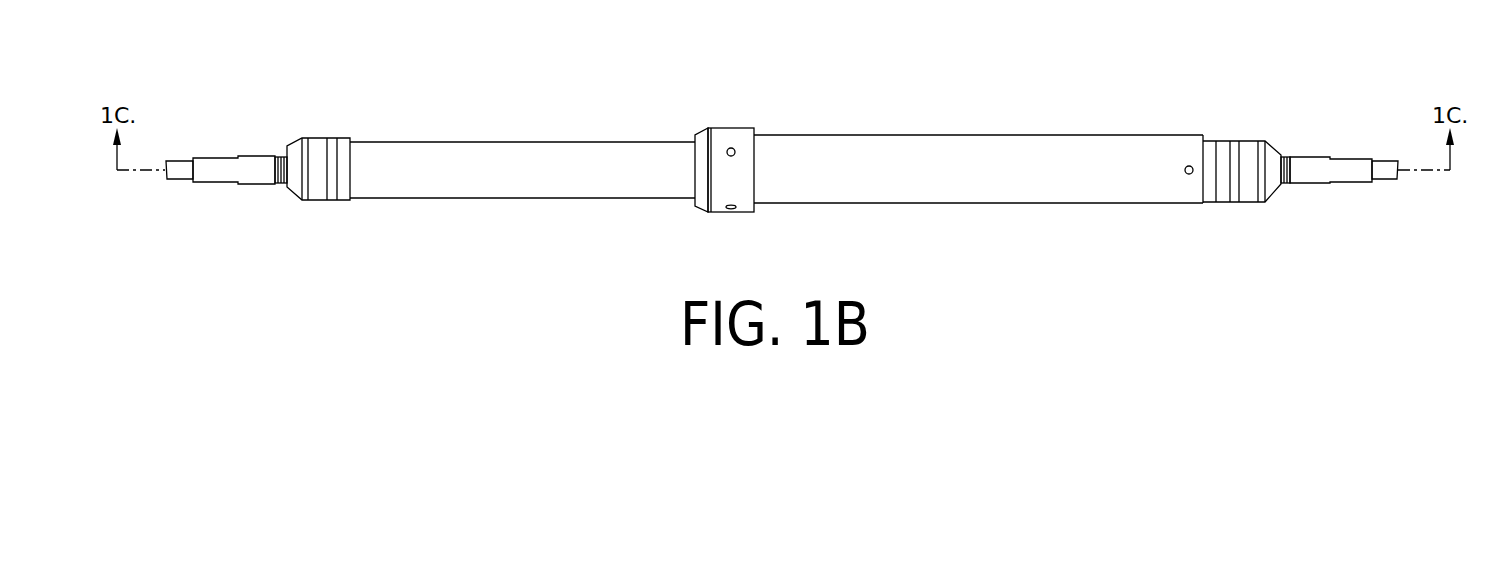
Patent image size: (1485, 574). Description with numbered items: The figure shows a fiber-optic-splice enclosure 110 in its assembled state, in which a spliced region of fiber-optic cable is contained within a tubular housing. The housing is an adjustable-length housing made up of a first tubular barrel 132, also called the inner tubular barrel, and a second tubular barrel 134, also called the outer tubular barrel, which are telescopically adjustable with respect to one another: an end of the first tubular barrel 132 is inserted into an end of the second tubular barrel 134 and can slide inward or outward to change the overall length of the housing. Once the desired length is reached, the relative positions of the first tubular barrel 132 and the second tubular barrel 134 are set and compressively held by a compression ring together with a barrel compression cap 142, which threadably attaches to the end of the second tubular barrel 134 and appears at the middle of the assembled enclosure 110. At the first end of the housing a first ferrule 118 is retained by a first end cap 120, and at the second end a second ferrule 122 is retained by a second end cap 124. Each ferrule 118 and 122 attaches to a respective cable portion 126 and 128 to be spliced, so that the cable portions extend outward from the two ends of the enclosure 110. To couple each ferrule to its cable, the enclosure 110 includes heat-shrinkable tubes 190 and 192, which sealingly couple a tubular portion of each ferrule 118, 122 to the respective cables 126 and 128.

The fiber-optic-splice enclosure 110 is at (900, 68).
The first ferrule 118 is at (282, 153).
The first end cap 120 is at (318, 195).
The second ferrule 122 is at (1283, 157).
The second end cap 124 is at (1250, 143).
The cable portion 126 is at (167, 177).
The cable portion 128 is at (1402, 178).
The first tubular barrel 132 is at (515, 190).
The second tubular barrel 134 is at (1002, 193).
The barrel compression cap 142 is at (703, 200).
The heat-shrinkable tube 190 is at (217, 168).
The heat-shrinkable tube 192 is at (1347, 170).